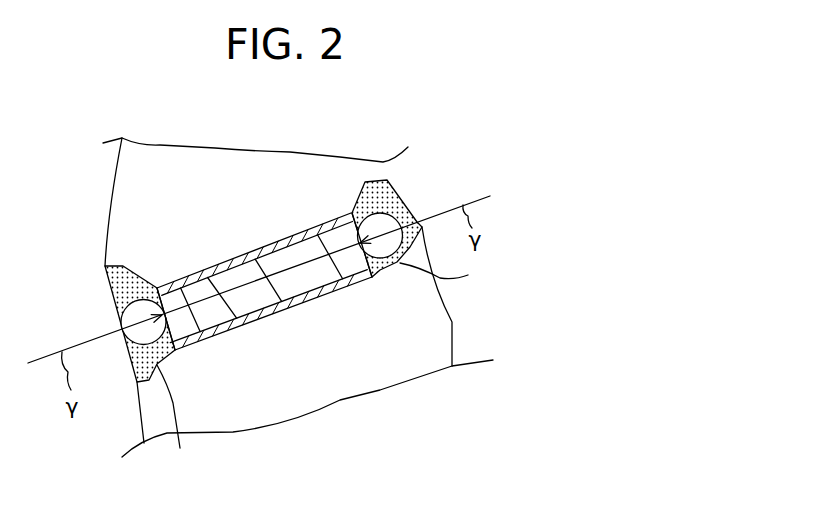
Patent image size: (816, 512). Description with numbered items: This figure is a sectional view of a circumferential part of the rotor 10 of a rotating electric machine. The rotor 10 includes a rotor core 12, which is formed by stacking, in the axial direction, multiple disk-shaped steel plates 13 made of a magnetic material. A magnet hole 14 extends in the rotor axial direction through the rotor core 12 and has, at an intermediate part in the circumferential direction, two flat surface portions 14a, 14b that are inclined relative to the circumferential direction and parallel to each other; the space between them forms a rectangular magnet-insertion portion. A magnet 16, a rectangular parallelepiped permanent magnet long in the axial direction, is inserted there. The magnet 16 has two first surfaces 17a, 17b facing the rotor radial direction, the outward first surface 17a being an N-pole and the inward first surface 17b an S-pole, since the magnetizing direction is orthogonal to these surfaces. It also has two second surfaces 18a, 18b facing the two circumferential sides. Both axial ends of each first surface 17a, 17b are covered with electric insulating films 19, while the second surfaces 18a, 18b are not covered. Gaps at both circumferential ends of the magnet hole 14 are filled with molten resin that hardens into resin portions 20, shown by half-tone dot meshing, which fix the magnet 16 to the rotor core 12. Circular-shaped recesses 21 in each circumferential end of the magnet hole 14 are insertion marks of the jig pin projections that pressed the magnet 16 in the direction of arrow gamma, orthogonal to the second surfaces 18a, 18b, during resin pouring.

The rotor 10 is at (262, 172).
The rotor core 12 is at (418, 360).
The steel plate 13 is at (417, 328).
The magnet hole 14 is at (261, 265).
The flat surface portion 14a is at (192, 292).
The flat surface portion 14b is at (219, 333).
The magnet 16 is at (288, 280).
The first surface 17a is at (300, 232).
The first surface 17b is at (331, 294).
The second surface 18a is at (457, 274).
The second surface 18b is at (185, 420).
The electric insulating film 19 is at (242, 312).
The resin portion 20 is at (108, 285).
The circular-shaped recess 21 is at (128, 323).